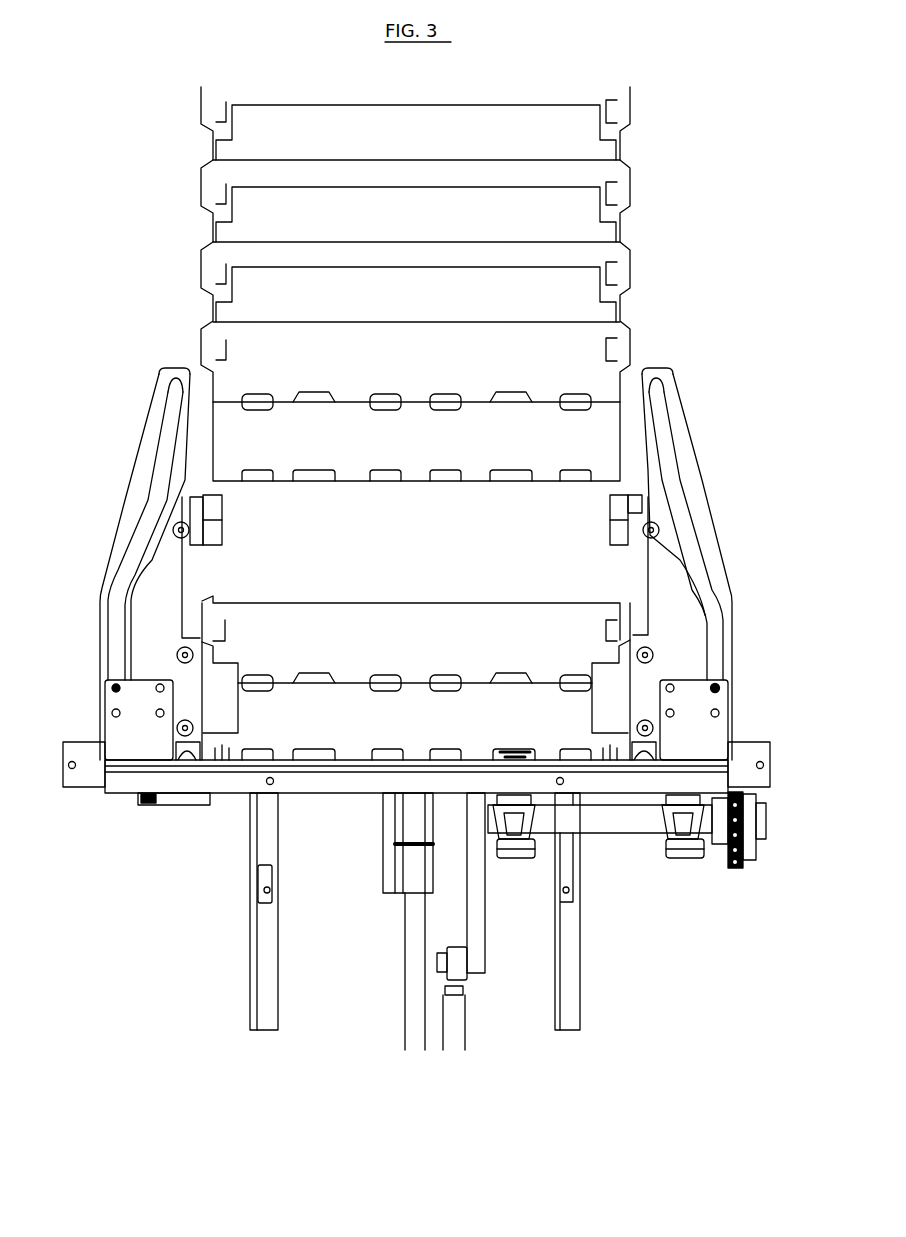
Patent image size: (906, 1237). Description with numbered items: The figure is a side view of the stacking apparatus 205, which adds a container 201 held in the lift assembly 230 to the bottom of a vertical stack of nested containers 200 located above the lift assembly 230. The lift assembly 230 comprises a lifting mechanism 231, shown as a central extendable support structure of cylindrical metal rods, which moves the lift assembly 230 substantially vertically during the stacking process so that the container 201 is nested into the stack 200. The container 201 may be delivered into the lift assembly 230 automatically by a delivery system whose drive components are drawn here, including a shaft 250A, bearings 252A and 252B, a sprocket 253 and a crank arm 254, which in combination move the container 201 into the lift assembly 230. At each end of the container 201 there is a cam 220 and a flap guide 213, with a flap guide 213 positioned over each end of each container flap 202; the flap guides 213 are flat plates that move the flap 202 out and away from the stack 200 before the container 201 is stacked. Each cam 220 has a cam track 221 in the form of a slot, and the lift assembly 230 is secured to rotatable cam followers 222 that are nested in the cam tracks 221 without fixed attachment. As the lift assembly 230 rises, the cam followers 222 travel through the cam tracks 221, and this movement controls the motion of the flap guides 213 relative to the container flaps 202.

The nested container stack 200 is at (190, 90).
The container 201 is at (350, 742).
The container flap 202 is at (253, 620).
The stacking apparatus 205 is at (685, 316).
The flap guide 213 is at (607, 532).
The cam 220 is at (712, 540).
The cam track 221 is at (646, 372).
The cam follower 222 is at (725, 681).
The lift assembly 230 is at (225, 795).
The lifting mechanism 231 is at (403, 1023).
The shaft 250A is at (615, 835).
The bearing 252A is at (515, 860).
The bearing 252B is at (688, 860).
The sprocket 253 is at (743, 865).
The crank arm 254 is at (475, 972).